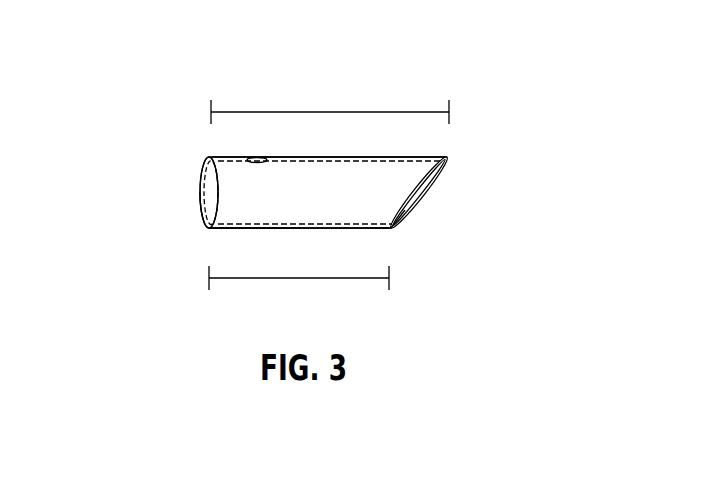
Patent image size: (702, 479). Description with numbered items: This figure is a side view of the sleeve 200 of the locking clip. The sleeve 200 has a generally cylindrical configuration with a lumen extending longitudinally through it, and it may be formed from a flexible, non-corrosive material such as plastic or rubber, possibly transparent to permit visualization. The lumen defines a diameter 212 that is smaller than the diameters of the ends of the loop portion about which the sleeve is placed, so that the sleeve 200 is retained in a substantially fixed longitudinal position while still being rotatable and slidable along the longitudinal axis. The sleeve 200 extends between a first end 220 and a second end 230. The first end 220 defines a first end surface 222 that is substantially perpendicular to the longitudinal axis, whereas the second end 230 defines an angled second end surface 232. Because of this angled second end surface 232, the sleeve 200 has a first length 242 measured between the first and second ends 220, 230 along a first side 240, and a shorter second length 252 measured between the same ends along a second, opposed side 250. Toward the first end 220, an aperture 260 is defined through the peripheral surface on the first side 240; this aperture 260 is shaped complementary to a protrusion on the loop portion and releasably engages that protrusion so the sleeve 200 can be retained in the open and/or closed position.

The sleeve 200 is at (443, 144).
The diameter 212 is at (204, 214).
The first end 220 is at (210, 230).
The first end surface 222 is at (202, 168).
The second end 230 is at (403, 229).
The angled second end surface 232 is at (446, 168).
The first side 240 is at (310, 156).
The first length 242 is at (328, 112).
The second side 250 is at (272, 230).
The second length 252 is at (298, 279).
The aperture 260 is at (255, 154).